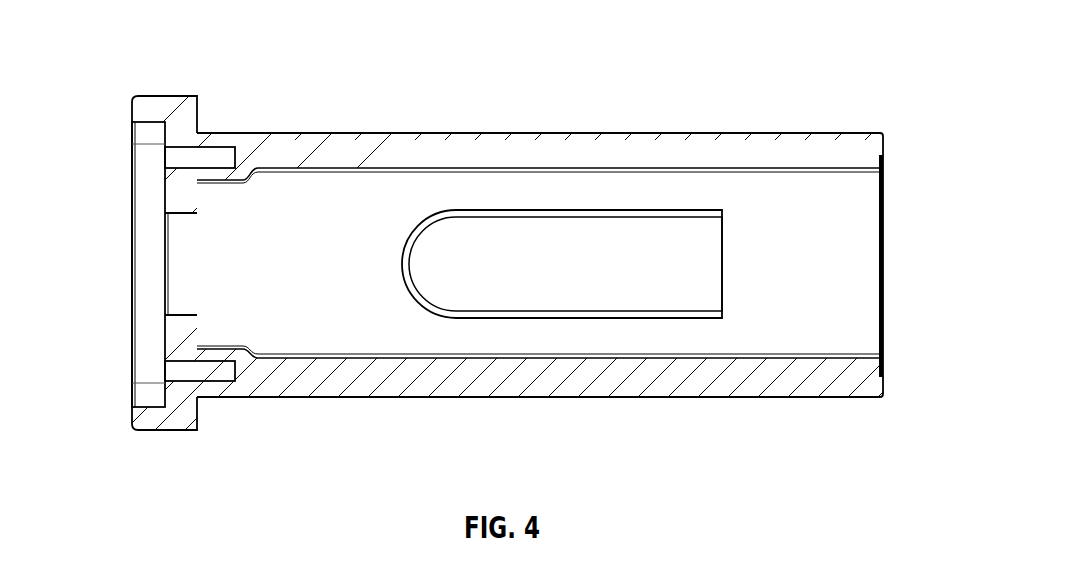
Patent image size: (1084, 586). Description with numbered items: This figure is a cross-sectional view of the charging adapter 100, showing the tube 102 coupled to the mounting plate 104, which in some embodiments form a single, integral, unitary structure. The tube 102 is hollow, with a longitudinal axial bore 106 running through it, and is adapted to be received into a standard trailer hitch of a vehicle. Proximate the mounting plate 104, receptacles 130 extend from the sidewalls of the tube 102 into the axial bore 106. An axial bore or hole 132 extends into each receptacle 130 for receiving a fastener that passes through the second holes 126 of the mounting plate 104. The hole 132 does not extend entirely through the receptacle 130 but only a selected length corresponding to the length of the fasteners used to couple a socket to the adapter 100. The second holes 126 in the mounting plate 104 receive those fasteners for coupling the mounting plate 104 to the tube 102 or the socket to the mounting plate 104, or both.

The charging adapter 100 is at (149, 53).
The tube 102 is at (713, 152).
The mounting plate 104 is at (163, 418).
The axial bore 106 is at (862, 283).
The second holes 126 is at (158, 369).
The receptacles 130 is at (217, 357).
The axial bore 132 is at (216, 366).